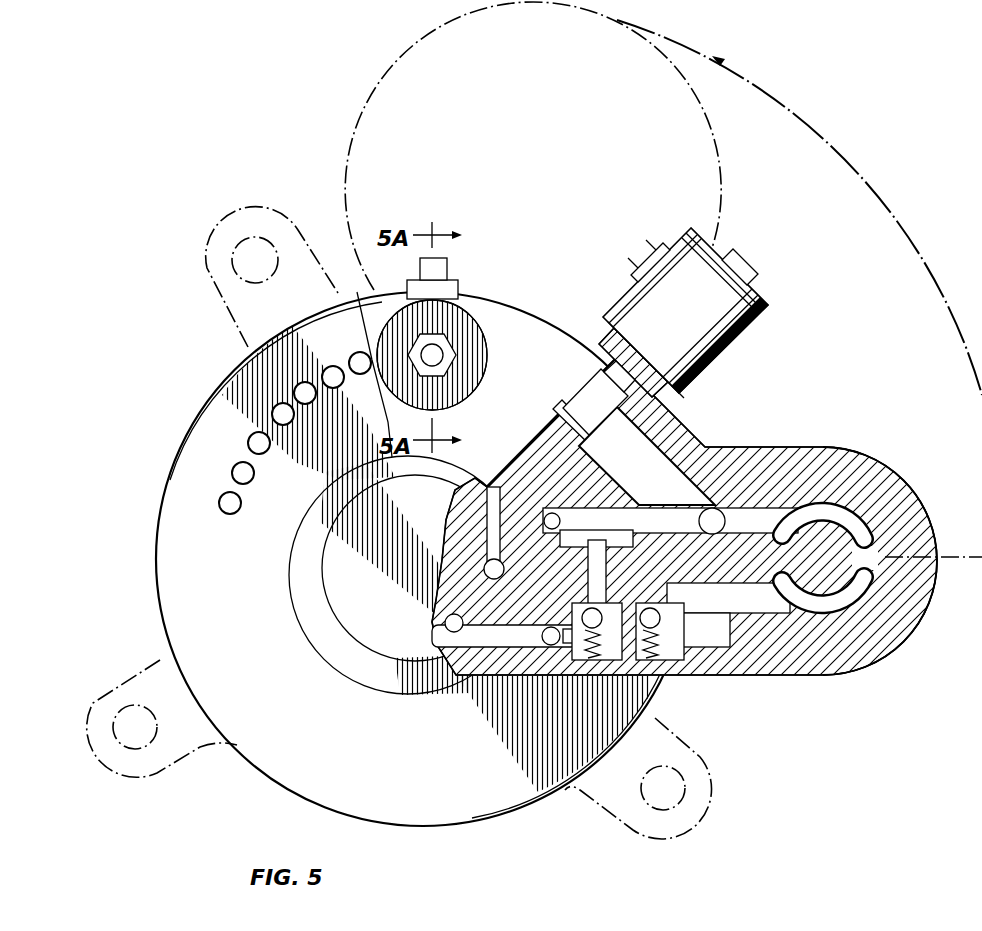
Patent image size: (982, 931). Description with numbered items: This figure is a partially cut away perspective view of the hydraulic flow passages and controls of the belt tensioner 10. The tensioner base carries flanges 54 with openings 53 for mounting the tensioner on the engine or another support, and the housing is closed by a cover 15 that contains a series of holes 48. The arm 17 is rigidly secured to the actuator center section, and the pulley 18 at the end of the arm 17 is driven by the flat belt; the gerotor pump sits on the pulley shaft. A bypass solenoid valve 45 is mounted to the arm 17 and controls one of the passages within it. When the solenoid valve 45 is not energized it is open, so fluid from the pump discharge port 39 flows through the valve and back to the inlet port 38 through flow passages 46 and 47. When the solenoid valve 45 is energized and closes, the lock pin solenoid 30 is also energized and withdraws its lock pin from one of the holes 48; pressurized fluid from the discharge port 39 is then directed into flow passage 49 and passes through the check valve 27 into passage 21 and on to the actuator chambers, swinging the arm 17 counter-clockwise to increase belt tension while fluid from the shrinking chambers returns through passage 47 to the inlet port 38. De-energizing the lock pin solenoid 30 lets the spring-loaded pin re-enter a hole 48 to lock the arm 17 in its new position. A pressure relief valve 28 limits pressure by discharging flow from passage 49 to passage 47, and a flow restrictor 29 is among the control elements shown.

The tensioner 10 is at (212, 382).
The cover 15 is at (158, 577).
The arm 17 is at (862, 465).
The pulley 18 is at (703, 160).
The flow passage 21 is at (432, 617).
The check valve 27 is at (587, 682).
The pressure relief valve 28 is at (633, 682).
The flow restrictor 29 is at (540, 600).
The lock pin solenoid 30 is at (468, 330).
The inlet port 38 is at (860, 588).
The discharge port 39 is at (867, 482).
The solenoid valve 45 is at (745, 318).
The flow passage 46 is at (663, 463).
The flow passage 47 is at (580, 463).
The holes 48 is at (228, 506).
The flow passage 49 is at (700, 479).
The openings 53 is at (688, 790).
The flanges 54 is at (680, 740).